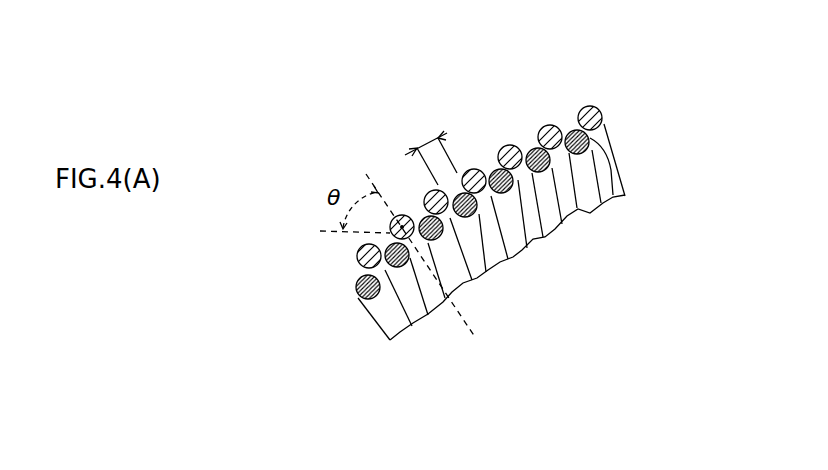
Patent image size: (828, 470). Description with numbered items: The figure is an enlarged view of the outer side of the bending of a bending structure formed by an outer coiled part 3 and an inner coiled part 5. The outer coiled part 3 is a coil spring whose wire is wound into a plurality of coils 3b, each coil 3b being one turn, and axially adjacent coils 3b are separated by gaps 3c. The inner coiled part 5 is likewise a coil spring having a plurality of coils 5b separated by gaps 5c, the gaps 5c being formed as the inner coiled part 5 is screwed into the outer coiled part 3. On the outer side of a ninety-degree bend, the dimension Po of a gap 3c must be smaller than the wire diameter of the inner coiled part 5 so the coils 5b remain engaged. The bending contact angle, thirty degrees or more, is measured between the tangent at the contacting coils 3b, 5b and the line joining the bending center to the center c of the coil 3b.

The outer coiled part 3 is at (590, 102).
The coil 3b is at (549, 124).
The gap 3c is at (530, 140).
The inner coiled part 5 is at (568, 130).
The coil 5b is at (627, 195).
The gap 5c is at (590, 214).
The center of the coil c is at (403, 225).
The dimension of the gap Po is at (426, 150).